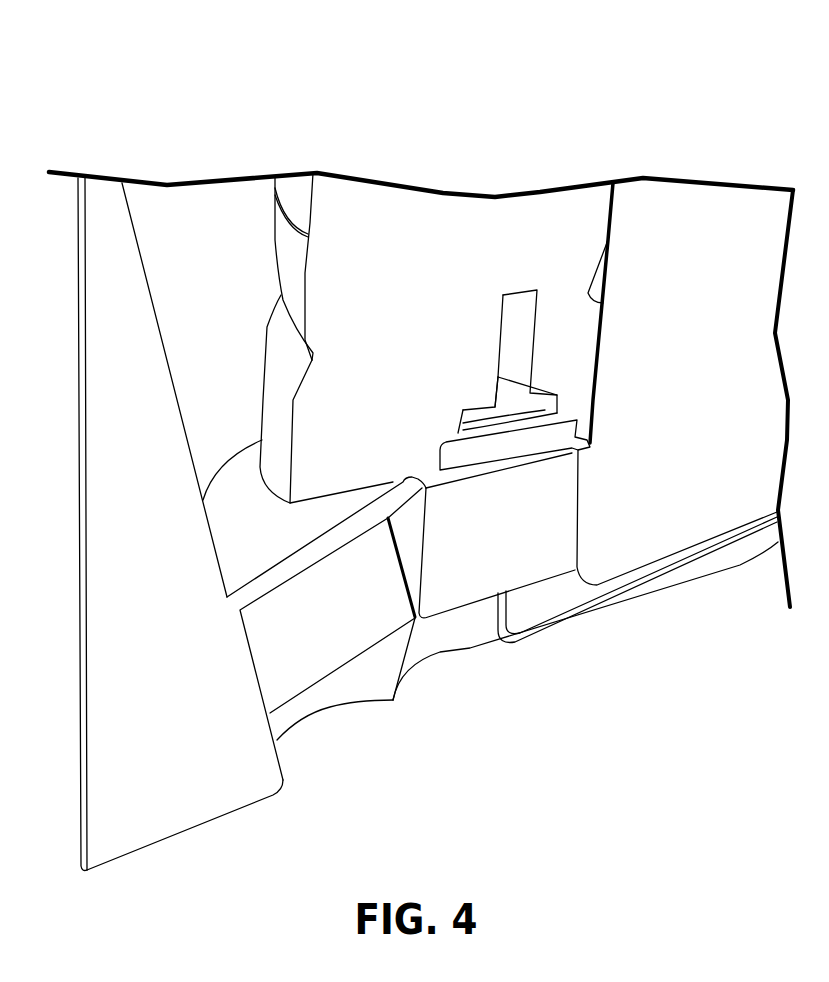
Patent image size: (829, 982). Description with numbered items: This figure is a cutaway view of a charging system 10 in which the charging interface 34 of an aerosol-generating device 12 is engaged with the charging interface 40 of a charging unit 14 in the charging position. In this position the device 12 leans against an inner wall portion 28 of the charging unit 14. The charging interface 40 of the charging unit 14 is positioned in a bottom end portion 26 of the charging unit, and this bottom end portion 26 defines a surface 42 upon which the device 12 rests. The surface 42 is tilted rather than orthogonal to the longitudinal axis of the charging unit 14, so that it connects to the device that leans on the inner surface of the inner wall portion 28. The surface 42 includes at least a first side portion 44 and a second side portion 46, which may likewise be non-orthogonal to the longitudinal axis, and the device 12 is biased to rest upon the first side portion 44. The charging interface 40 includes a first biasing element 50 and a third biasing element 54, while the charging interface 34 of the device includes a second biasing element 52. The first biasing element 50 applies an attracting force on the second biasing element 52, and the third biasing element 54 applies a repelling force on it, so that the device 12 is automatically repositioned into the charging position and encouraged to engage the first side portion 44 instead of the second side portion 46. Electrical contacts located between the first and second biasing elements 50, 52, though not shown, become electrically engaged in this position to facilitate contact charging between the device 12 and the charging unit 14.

The charging system 10 is at (175, 72).
The aerosol-generating device 12 is at (446, 192).
The charging unit 14 is at (104, 412).
The bottom end portion 26 is at (72, 577).
The inner wall portion 28 is at (258, 228).
The charging interface 34 is at (249, 370).
The charging interface 40 is at (225, 642).
The surface 42 is at (250, 465).
The first side portion 44 is at (543, 453).
The second side portion 46 is at (240, 553).
The first biasing element 50 is at (555, 540).
The second biasing element 52 is at (485, 453).
The third biasing element 54 is at (343, 670).